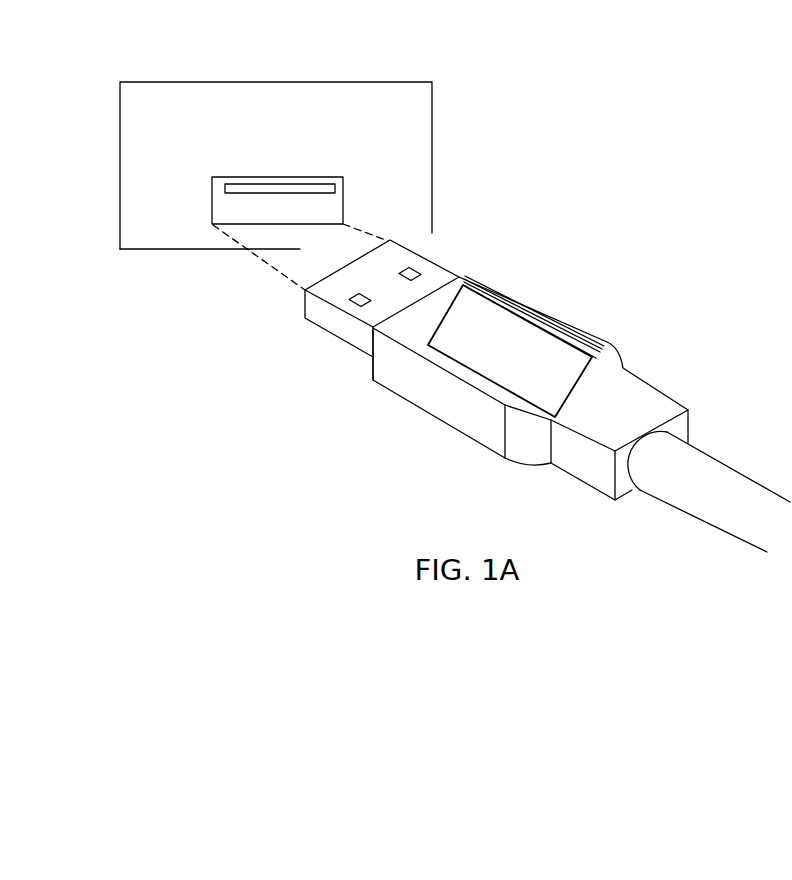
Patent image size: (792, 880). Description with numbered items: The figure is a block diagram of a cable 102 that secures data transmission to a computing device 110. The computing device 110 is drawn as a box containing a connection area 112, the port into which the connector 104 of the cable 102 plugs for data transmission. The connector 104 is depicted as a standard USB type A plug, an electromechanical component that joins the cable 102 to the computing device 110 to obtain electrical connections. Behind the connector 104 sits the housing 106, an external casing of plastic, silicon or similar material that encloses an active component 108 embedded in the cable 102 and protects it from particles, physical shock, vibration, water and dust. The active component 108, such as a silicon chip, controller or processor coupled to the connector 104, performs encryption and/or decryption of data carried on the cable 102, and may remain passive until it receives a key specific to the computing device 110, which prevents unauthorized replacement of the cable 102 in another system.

The cable 102 is at (711, 423).
The connector 104 is at (400, 251).
The housing 106 is at (519, 262).
The active component 108 is at (545, 328).
The computing device 110 is at (120, 102).
The connection area 112 is at (212, 196).